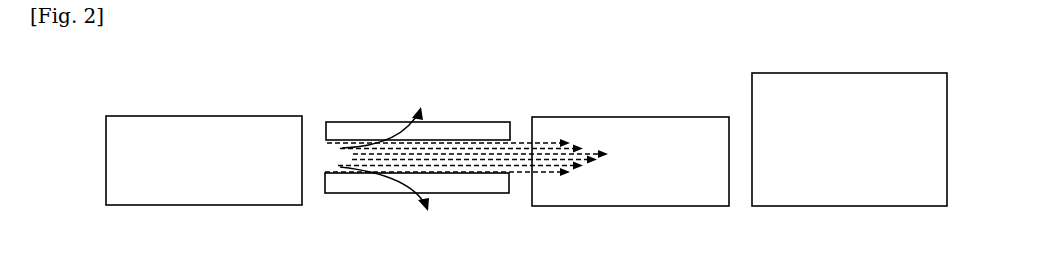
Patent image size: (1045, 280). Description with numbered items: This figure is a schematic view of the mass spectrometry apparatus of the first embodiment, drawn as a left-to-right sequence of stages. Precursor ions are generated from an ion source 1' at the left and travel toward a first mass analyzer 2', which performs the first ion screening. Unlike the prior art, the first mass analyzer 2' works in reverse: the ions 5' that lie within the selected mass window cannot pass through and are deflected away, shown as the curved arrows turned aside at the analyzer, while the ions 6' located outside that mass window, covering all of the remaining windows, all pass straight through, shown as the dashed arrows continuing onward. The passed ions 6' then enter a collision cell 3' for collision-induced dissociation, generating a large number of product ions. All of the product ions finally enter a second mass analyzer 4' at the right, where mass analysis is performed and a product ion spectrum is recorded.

The ion source 1' is at (204, 192).
The first mass analyzer 2' is at (417, 196).
The collision cell 3' is at (630, 194).
The second mass analyzer 4' is at (849, 173).
The ions in the mass window 5' is at (392, 144).
The ions located outside the mass window 6' is at (466, 170).